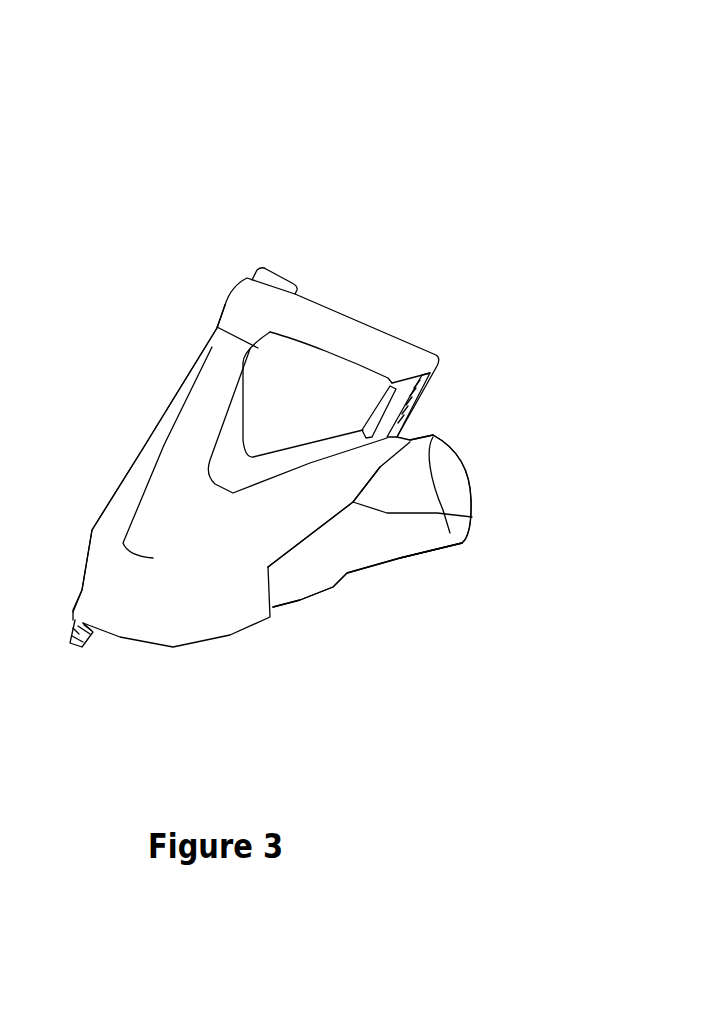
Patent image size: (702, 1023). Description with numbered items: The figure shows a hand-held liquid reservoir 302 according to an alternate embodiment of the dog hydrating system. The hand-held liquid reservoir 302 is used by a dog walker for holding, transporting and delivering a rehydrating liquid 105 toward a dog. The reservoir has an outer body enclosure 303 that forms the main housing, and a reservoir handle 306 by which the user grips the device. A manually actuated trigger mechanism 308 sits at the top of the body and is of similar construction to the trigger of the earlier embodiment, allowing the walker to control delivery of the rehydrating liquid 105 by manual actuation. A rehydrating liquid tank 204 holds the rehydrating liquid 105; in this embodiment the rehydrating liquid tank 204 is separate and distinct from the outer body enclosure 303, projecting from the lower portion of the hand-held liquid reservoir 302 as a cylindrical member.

The hand-held liquid reservoir 302 is at (308, 358).
The outer body enclosure 303 is at (134, 416).
The reservoir handle 306 is at (414, 339).
The manually actuated trigger mechanism 308 is at (295, 265).
The rehydrating liquid tank 204 is at (479, 465).
The rehydrating liquid 105 is at (361, 556).